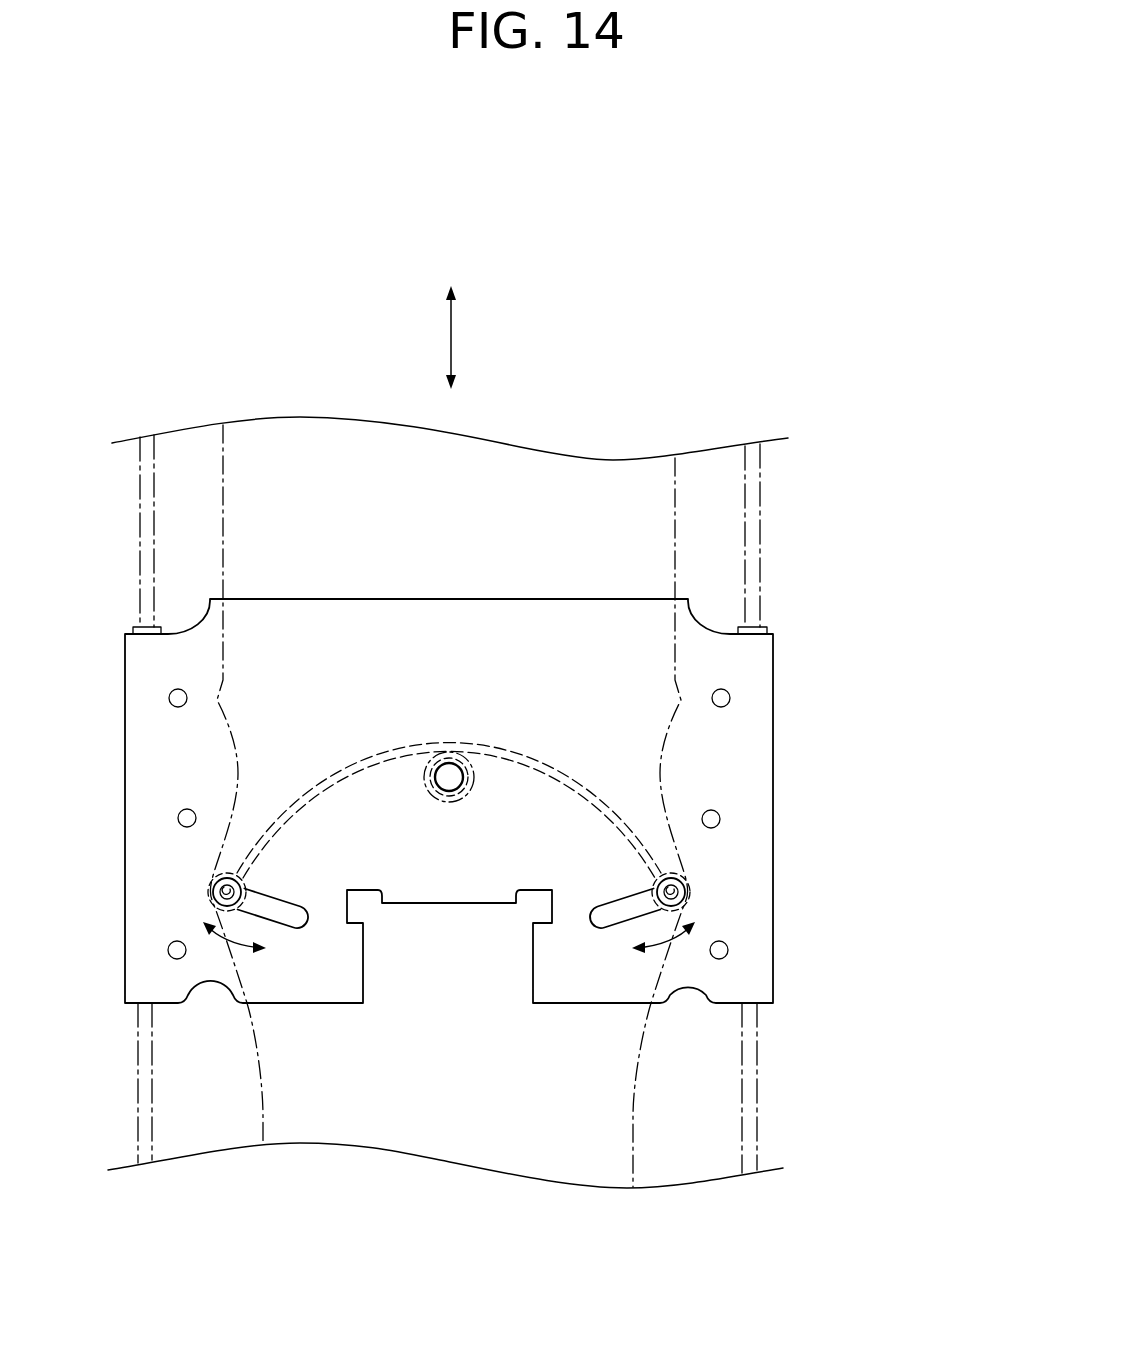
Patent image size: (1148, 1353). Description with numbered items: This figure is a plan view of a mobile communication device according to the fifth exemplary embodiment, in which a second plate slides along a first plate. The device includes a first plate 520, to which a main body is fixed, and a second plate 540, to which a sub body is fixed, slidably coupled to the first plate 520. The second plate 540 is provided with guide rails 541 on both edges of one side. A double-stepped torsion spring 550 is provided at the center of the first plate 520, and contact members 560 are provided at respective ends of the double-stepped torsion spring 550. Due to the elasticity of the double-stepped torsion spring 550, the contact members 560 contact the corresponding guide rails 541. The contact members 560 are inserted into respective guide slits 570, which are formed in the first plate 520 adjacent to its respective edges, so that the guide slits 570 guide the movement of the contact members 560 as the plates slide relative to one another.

The first plate 520 is at (747, 765).
The second plate 540 is at (713, 517).
The guide rail 541 is at (675, 495).
The double-stepped torsion spring 550 is at (558, 763).
The contact member 560 is at (687, 905).
The guide slit 570 is at (620, 912).